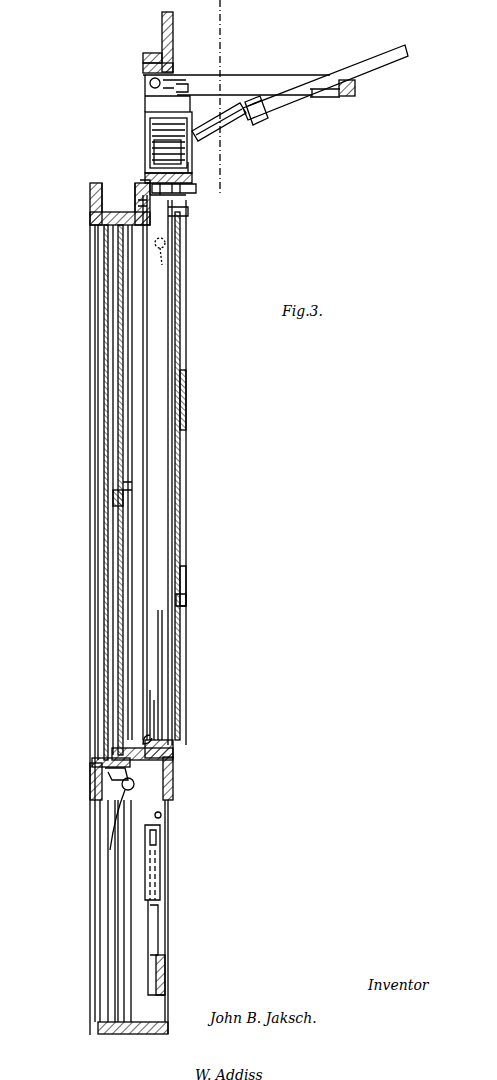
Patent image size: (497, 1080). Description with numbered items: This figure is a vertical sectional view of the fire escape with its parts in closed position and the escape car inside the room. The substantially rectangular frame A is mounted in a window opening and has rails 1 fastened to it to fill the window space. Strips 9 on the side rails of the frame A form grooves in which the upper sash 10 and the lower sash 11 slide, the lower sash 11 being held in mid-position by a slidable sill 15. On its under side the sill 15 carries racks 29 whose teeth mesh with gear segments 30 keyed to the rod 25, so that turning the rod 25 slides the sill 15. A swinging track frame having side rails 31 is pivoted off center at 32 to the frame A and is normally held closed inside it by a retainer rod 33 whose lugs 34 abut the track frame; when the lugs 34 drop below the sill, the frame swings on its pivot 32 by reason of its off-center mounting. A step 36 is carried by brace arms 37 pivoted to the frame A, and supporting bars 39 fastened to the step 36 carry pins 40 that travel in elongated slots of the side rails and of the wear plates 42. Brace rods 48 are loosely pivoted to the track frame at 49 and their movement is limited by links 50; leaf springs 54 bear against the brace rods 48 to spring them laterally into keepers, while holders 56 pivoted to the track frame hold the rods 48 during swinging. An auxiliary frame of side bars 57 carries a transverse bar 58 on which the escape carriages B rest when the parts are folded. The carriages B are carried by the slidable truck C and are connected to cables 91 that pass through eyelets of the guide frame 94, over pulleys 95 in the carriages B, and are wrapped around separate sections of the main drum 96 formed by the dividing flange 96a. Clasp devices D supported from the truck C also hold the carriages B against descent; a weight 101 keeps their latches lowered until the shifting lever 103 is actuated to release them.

The rails 1 is at (161, 30).
The strips 9 is at (130, 352).
The upper sash 10 is at (110, 218).
The lower sash 11 is at (120, 694).
The slidable sill 15 is at (94, 760).
The rod 25 is at (130, 790).
The racks 29 is at (96, 784).
The gear segments 30 is at (126, 786).
The rails 31 is at (165, 740).
The pivot 32 is at (180, 268).
The retainer member or rod 33 is at (176, 753).
The lugs 34 is at (152, 727).
The step 36 is at (166, 988).
The brace arms 37 is at (162, 838).
The supporting arms or bars 39 is at (158, 956).
The pins 40 is at (158, 850).
The wear plates 42 is at (148, 884).
The brace rods 48 is at (186, 300).
The pivot 49 is at (188, 600).
The links 50 is at (188, 416).
The leaf springs 54 is at (188, 578).
The holders 56 is at (190, 228).
The side bars 57 is at (283, 80).
The transverse bar 58 is at (350, 97).
The cables or ropes 91 is at (150, 150).
The guide frame 94 is at (232, 118).
The pulleys 95 is at (245, 102).
The main drum 96 is at (146, 114).
The dividing flange 96a is at (145, 131).
The weight 101 is at (148, 216).
The shifting lever or member 103 is at (182, 202).
The frame A is at (98, 190).
The escape carriages B is at (314, 97).
The slidable carriage or truck C is at (190, 164).
The clasp devices D is at (192, 112).